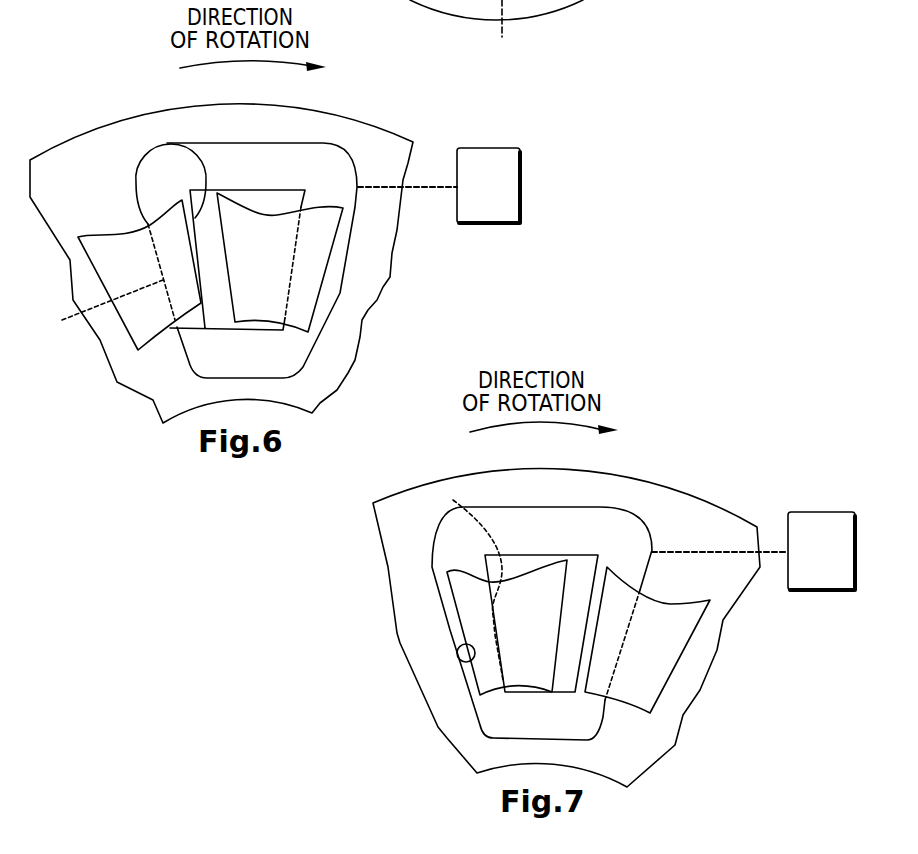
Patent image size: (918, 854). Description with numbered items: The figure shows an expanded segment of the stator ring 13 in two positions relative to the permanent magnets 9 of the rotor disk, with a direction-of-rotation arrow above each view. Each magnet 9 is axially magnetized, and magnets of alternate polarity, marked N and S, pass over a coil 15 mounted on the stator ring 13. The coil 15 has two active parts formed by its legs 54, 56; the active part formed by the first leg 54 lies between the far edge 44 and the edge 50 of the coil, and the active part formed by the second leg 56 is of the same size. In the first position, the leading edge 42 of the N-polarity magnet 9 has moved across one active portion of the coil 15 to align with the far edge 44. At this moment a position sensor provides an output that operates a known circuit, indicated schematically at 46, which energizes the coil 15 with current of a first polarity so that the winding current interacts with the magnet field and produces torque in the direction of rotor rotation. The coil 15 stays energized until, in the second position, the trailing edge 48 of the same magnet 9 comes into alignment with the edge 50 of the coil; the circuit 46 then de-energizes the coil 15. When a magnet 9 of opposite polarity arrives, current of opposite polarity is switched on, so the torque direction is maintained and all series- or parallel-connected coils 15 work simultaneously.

In FIG. 6, the permanent magnet 9 is at (103, 261).
In FIG. 7, the permanent magnet 9 is at (522, 655).
In FIG. 6, the stator ring 13 is at (80, 183).
In FIG. 7, the stator ring 13 is at (415, 525).
In FIG. 6, the coil 15 is at (313, 170).
In FIG. 7, the coil 15 is at (623, 530).
In FIG. 6, the leading edge 42 is at (200, 302).
In FIG. 7, the leading edge 42 is at (560, 607).
In FIG. 6, the far edge 44 is at (167, 143).
In FIG. 7, the far edge 44 is at (453, 500).
In FIG. 6, the circuit 46 is at (507, 187).
In FIG. 7, the circuit 46 is at (818, 540).
In FIG. 6, the trailing edge 48 is at (205, 328).
In FIG. 7, the trailing edge 48 is at (460, 647).
In FIG. 6, the edge 50 is at (98, 306).
In FIG. 7, the edge 50 is at (447, 607).
In FIG. 6, the leg 54 is at (148, 208).
In FIG. 7, the leg 54 is at (497, 707).
In FIG. 7, the leg 56 is at (638, 562).